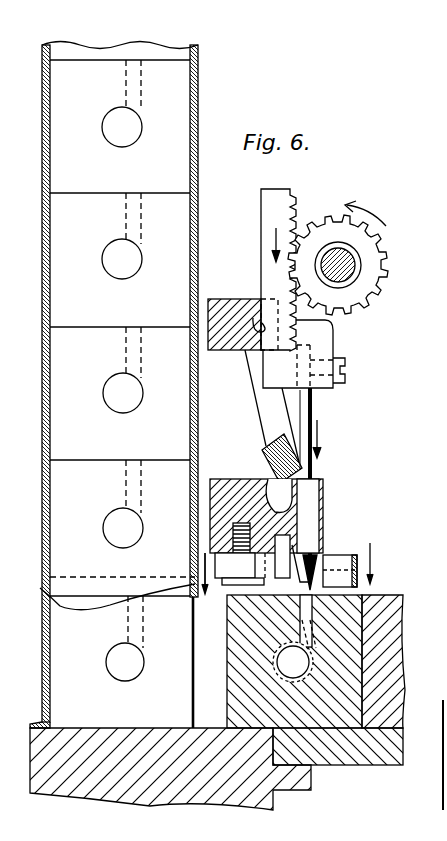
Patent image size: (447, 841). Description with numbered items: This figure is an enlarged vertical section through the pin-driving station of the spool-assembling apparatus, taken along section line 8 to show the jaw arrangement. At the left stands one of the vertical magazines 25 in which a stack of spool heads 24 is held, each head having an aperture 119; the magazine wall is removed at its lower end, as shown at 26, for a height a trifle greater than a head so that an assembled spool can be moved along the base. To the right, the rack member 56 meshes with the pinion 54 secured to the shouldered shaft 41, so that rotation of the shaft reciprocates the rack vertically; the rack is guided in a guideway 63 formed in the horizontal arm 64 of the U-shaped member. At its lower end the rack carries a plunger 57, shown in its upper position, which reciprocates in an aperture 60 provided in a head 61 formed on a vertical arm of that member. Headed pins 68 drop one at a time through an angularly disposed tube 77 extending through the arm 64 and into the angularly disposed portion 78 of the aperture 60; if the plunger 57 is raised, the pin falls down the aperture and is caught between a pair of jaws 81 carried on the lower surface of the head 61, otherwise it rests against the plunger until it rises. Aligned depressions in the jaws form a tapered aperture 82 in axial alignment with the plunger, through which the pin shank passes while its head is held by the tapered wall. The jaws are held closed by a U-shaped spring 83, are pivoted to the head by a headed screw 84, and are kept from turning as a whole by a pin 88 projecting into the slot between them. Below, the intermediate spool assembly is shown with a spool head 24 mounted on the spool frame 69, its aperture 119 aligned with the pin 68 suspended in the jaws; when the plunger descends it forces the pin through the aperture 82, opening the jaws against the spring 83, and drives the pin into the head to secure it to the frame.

The section line 8— 8 is at (292, 573).
The spool heads 24 is at (74, 349).
The vertical magazines 25 is at (42, 116).
The removed wall portions 26 is at (58, 578).
The shouldered shaft 41 is at (350, 272).
The pinion 54 is at (386, 262).
The rack member 56 is at (274, 197).
The plunger 57 is at (313, 408).
The aperture 60 is at (306, 552).
The head 61 is at (322, 512).
The guideway 63 is at (245, 302).
The horizontal arm 64 is at (208, 308).
The headed pins 68 is at (338, 566).
The spool frame 69 is at (312, 668).
The angularly disposed tube 77 is at (266, 437).
The angularly disposed portion of aperture 78 is at (270, 490).
The jaws 81 is at (300, 598).
The aperture 82 is at (281, 527).
The U-shaped spring 83 is at (360, 573).
The headed screw 84 is at (233, 536).
The pin 88 is at (222, 566).
The apertures 119 is at (138, 100).